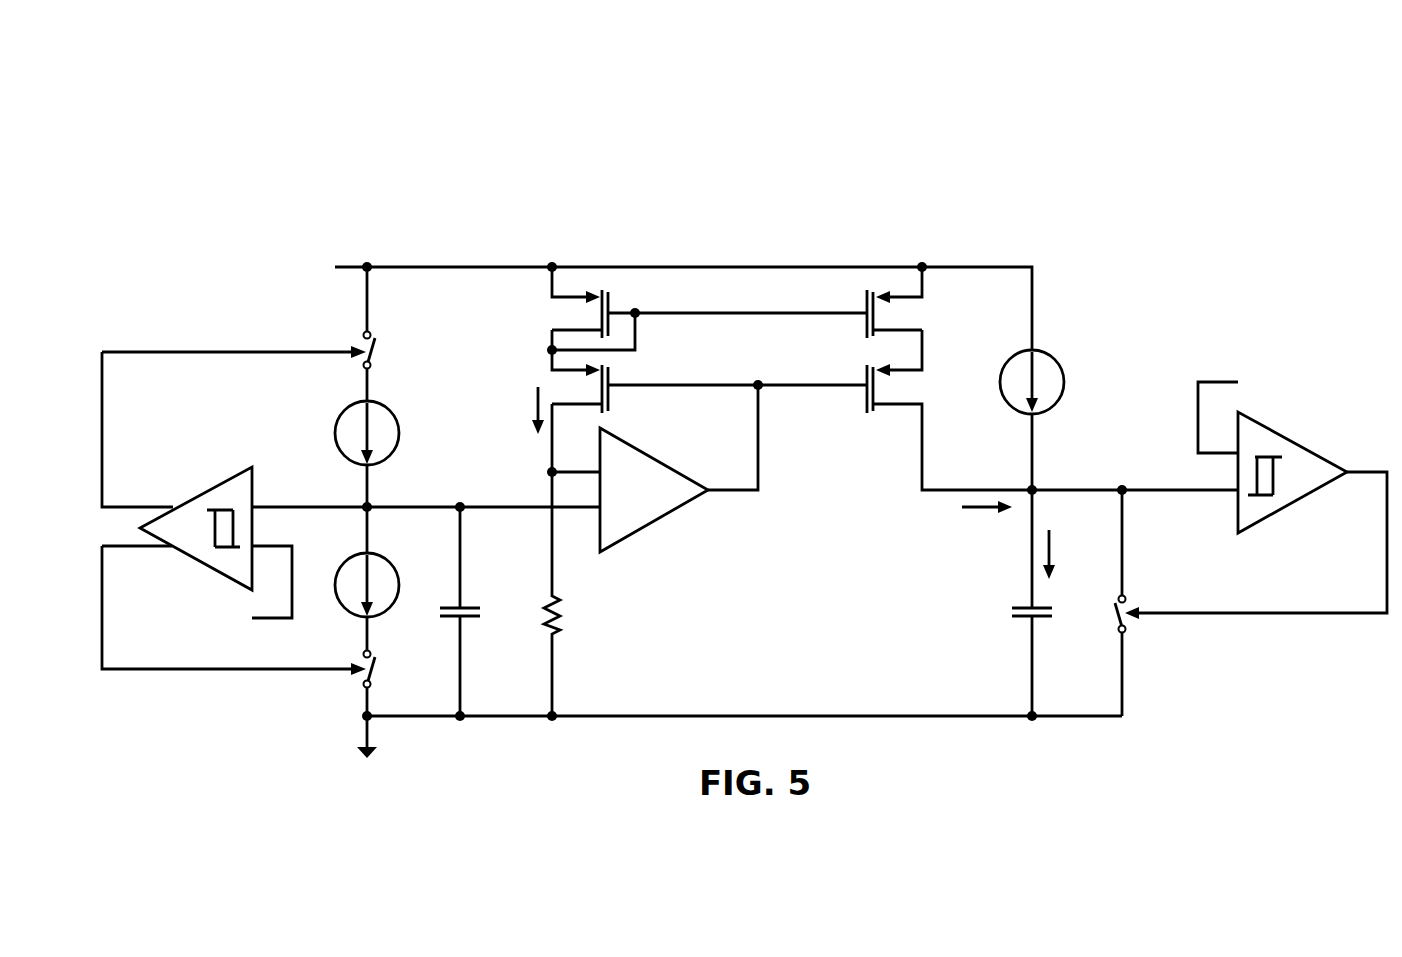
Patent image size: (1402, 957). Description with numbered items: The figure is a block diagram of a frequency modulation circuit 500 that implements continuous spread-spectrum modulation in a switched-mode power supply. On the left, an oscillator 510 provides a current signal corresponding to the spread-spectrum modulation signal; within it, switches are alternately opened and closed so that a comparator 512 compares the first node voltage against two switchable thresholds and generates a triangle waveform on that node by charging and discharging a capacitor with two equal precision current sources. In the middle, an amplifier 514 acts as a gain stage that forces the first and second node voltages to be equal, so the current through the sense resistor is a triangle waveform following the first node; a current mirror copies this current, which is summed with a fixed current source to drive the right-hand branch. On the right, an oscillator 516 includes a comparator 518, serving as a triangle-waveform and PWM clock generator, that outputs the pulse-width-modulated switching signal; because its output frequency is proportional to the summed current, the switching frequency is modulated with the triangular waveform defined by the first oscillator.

The frequency modulation circuit 500 is at (243, 107).
The oscillator 510 is at (548, 217).
The comparator 512 is at (213, 488).
The amplifier 514 is at (657, 521).
The oscillator 516 is at (1383, 217).
The comparator 518 is at (1290, 507).